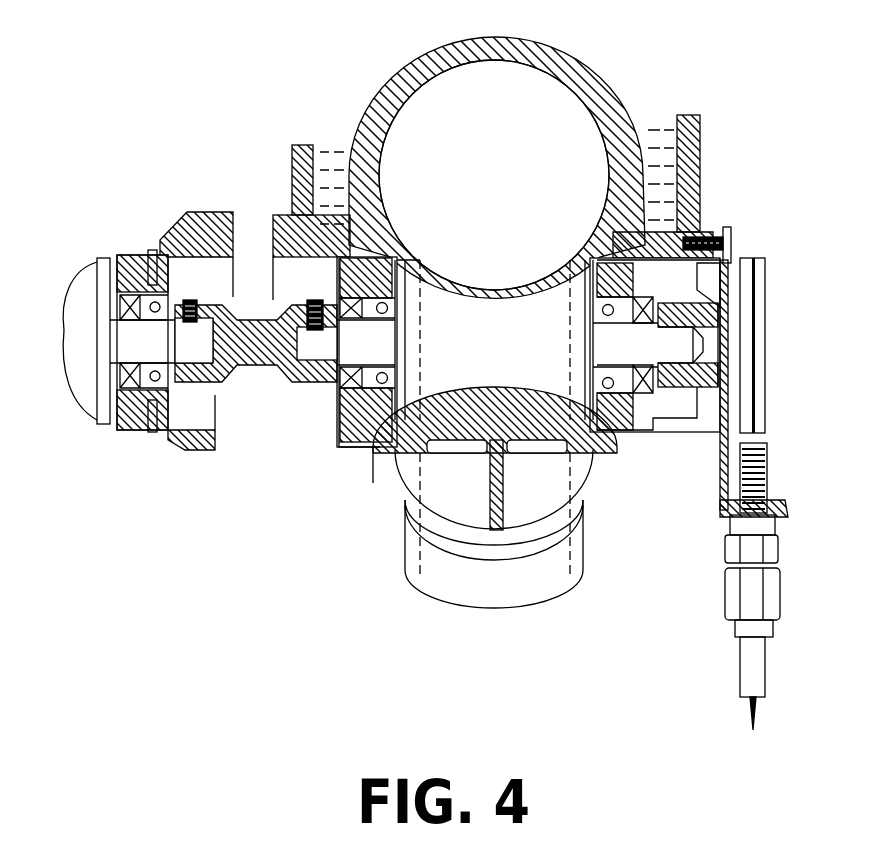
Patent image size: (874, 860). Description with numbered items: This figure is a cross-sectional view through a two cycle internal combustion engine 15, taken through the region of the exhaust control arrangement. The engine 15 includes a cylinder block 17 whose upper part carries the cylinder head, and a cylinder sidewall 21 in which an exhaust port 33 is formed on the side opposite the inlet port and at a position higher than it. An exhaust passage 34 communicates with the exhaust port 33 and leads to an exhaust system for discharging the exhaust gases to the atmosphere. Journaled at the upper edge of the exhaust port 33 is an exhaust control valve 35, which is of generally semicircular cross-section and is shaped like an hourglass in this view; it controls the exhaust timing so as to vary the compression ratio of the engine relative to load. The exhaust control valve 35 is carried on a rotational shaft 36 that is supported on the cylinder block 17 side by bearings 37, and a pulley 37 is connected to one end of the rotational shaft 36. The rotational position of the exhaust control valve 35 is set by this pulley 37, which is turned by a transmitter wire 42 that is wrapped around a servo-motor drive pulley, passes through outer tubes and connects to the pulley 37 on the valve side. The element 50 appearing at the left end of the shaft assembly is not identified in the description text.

The two cycle internal combustion engine 15 is at (277, 561).
The cylinder block 17 is at (724, 150).
The cylinder sidewall 21 is at (610, 108).
The exhaust port 33 is at (388, 234).
The exhaust passage 34 is at (543, 590).
The exhaust control valve 35 is at (462, 373).
The rotational shaft 36 is at (292, 382).
The pulley 37 is at (762, 367).
The transmitter wire 42 is at (767, 443).
The handle knob 50 is at (85, 390).